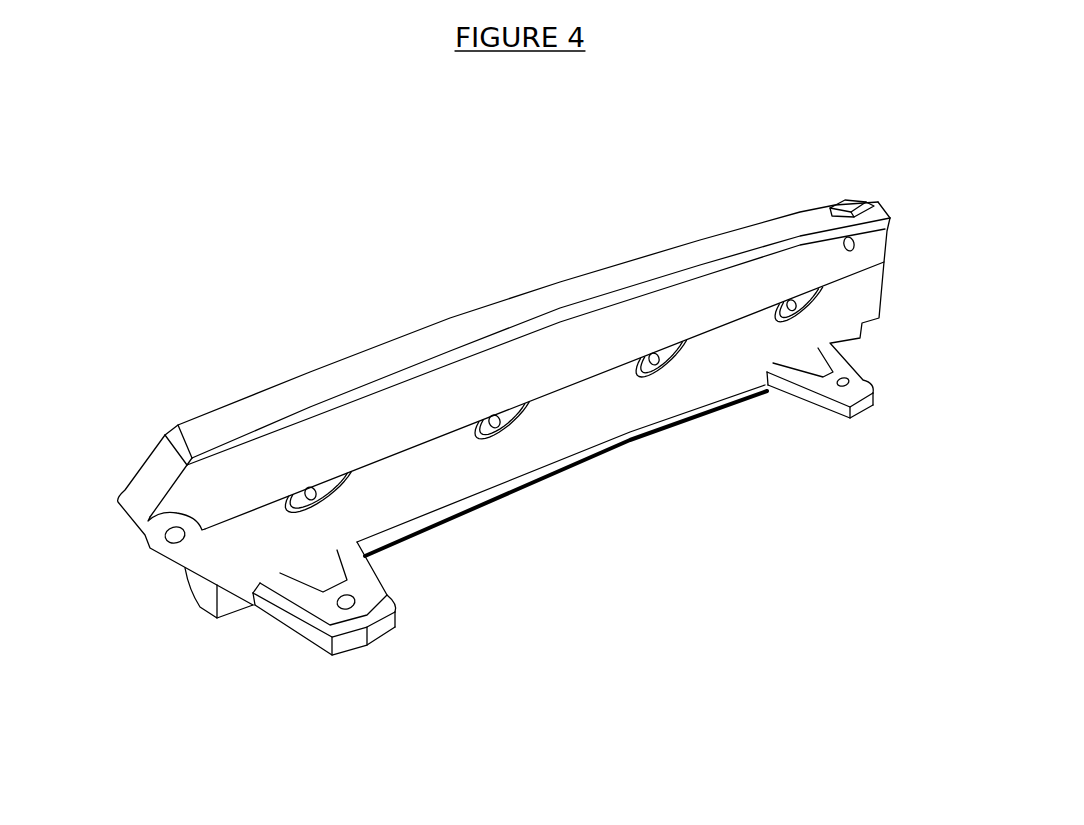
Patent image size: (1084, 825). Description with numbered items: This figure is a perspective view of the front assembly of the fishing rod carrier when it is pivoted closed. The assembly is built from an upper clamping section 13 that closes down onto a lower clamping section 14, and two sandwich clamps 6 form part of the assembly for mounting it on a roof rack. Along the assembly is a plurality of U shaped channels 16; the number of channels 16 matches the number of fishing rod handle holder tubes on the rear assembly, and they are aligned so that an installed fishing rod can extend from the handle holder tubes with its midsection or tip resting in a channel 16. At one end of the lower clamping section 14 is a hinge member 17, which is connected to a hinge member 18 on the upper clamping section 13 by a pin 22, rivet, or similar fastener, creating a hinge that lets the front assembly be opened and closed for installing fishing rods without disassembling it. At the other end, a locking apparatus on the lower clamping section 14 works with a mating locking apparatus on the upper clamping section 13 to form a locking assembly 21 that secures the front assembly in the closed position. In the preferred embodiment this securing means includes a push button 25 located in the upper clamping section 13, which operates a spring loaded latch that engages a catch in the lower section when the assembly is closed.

The sandwich clamp 6 is at (418, 630).
The upper clamping section 13 is at (354, 350).
The lower clamping section 14 is at (640, 440).
The U shaped channel 16 is at (680, 360).
The hinge member 17 is at (219, 623).
The hinge member 18 is at (134, 484).
The locking assembly 21 is at (866, 194).
The pin 22 is at (168, 544).
The push button 25 is at (838, 204).